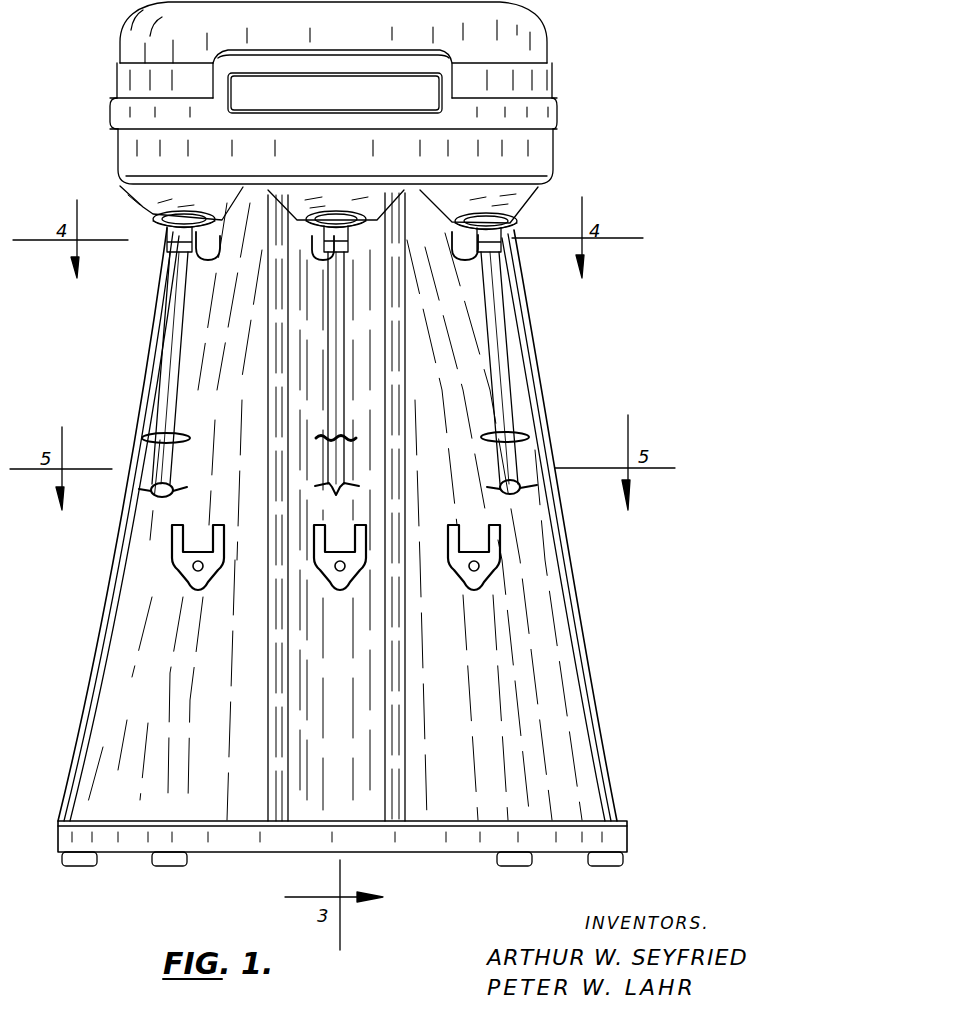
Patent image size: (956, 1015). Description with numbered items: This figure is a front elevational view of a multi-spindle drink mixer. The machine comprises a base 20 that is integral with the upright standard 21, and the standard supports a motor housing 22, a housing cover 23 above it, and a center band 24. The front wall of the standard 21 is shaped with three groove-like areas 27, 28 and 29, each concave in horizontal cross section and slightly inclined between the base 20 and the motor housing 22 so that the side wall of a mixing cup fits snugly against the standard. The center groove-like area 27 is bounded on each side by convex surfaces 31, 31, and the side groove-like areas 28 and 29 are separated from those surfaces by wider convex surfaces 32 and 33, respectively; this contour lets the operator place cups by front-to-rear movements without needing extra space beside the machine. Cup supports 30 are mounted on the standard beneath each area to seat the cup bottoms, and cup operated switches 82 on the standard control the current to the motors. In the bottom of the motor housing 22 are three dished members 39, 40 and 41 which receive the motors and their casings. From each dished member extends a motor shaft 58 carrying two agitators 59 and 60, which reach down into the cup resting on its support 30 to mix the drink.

The base 20 is at (603, 833).
The standard 21 is at (570, 763).
The motor housing 22 is at (527, 160).
The housing cover 23 is at (533, 43).
The center band 24 is at (553, 124).
The center groove-like area 27 is at (340, 635).
The left side groove-like area 28 is at (183, 700).
The right side groove-like area 29 is at (488, 707).
The support 30 is at (223, 562).
The convex surface 31 is at (393, 658).
The wider convex surface 32 is at (120, 615).
The wider convex surface 33 is at (553, 597).
The center dished member 39 is at (302, 218).
The side dished member 40 is at (160, 232).
The side dished member 41 is at (513, 217).
The motor shaft 58 is at (170, 370).
The agitator 59 is at (143, 439).
The agitator 60 is at (150, 488).
The cup operated switch 82 is at (219, 247).